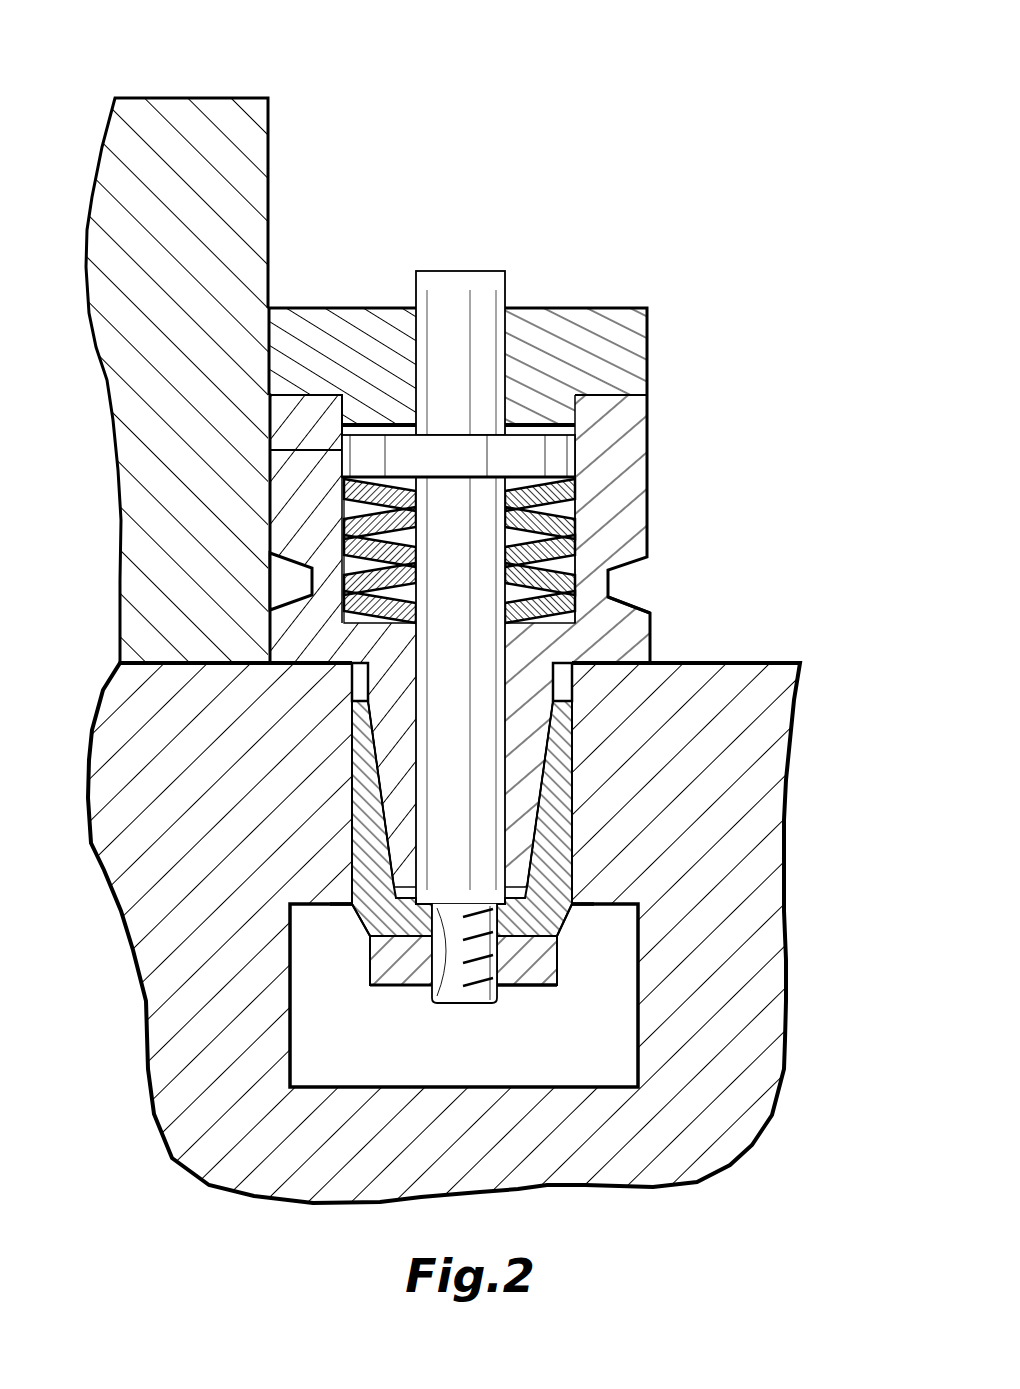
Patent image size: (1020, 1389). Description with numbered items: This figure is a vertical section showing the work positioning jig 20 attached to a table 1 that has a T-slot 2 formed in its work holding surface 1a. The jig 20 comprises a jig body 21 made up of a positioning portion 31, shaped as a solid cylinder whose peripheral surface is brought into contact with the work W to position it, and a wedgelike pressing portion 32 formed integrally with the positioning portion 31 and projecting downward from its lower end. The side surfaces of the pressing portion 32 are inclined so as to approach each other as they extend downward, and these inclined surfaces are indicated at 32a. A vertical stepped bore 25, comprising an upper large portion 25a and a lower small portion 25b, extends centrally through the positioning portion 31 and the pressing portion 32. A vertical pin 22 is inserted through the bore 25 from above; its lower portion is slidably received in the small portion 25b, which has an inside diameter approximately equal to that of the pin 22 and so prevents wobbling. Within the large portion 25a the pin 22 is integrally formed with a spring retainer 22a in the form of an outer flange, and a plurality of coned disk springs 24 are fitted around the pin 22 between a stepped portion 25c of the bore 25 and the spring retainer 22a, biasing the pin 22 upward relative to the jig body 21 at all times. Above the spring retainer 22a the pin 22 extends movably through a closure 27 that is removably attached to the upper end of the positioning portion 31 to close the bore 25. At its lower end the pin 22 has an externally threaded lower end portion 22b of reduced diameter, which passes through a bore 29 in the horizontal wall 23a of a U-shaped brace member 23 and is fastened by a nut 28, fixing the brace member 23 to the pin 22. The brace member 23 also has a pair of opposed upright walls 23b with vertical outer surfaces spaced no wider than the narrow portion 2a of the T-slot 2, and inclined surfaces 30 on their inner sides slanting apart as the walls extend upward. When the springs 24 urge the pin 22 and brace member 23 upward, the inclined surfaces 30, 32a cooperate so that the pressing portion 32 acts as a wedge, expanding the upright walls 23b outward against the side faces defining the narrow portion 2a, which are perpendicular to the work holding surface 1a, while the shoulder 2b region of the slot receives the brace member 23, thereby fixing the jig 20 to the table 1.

The work W is at (178, 128).
The table 1 is at (853, 655).
The work holding surface 1a is at (768, 662).
The T-slot 2 is at (642, 993).
The narrow portion of T-slot 2a is at (574, 806).
The shoulder 2b is at (353, 903).
The work positioning jig 20 is at (548, 552).
The jig body 21 is at (640, 495).
The vertical pin 22 is at (455, 290).
The spring retainer 22a is at (560, 456).
The externally threaded lower end portion 22b is at (475, 998).
The brace member 23 is at (568, 752).
The horizontal wall 23a is at (410, 928).
The upright walls 23b is at (560, 779).
The coned disk springs 24 is at (560, 557).
The vertical stepped bore 25 is at (345, 525).
The upper large portion of bore 25a is at (355, 462).
The lower small portion of bore 25b is at (418, 786).
The stepped portion of bore 25c is at (300, 581).
The closure 27 is at (600, 318).
The nut 28 is at (528, 981).
The bore 29 is at (437, 1000).
The inclined surfaces 30 is at (358, 722).
The positioning portion 31 is at (648, 632).
The pressing portion 32 is at (530, 812).
The inclined surfaces 32a is at (560, 884).